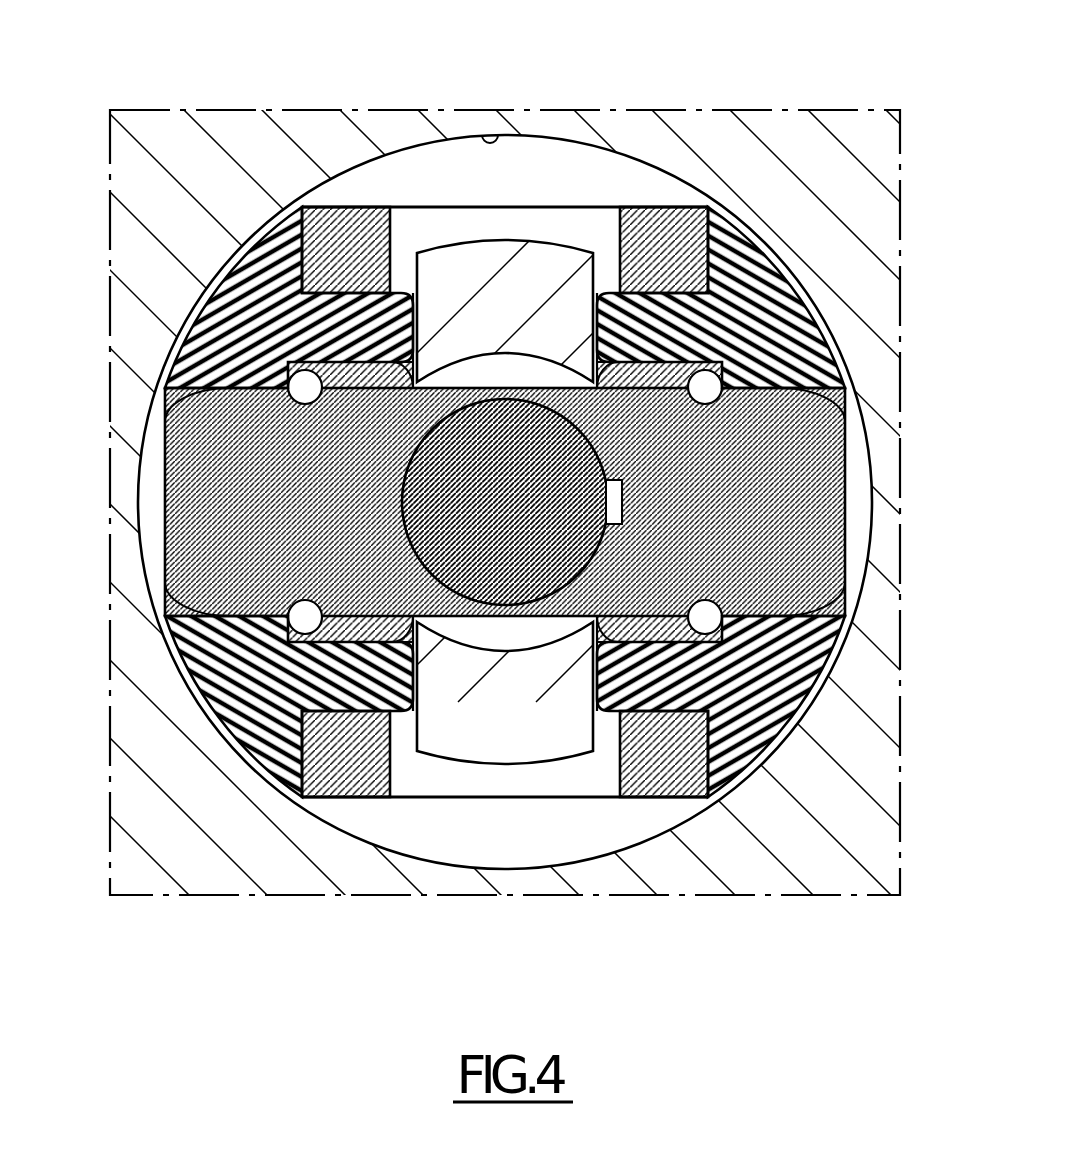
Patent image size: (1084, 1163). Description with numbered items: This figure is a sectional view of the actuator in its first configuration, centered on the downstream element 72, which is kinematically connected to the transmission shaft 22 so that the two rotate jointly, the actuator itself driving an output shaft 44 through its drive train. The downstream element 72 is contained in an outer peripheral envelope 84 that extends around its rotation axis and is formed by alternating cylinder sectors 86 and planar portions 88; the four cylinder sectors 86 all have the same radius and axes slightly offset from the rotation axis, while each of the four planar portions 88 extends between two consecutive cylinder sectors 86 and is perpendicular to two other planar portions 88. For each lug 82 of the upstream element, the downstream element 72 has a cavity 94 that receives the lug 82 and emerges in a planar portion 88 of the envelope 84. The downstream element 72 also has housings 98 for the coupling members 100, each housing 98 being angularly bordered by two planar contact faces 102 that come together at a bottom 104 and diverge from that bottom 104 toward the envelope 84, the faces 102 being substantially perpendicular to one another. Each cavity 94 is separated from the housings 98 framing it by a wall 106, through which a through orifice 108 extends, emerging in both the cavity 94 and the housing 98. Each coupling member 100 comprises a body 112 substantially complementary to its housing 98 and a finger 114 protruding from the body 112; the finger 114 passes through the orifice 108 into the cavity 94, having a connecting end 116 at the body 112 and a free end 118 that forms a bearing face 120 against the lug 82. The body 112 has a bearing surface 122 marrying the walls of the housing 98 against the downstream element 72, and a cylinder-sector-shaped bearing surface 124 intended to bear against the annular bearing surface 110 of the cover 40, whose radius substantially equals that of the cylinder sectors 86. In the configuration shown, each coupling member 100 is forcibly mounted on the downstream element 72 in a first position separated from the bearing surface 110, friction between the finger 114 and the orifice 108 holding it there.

The transmission shaft 22 is at (420, 512).
The output shaft 44 is at (463, 502).
The cover 40 is at (542, 581).
The downstream element 72 is at (502, 501).
The lug 82 is at (498, 496).
The outer peripheral envelope 84 is at (150, 503).
The cylindrical sector of revolution 86 is at (502, 491).
The planar portion 88 is at (555, 212).
The cavity 94 is at (498, 496).
The housing 98 is at (502, 501).
The coupling member 100 is at (502, 491).
The contact face 102 is at (502, 496).
The bottom 104 is at (705, 405).
The wall 106 is at (352, 250).
The through orifice 108 is at (505, 501).
The annular bearing surface 110 is at (466, 454).
The body 112 is at (502, 491).
The finger 114 is at (502, 496).
The connecting end 116 is at (502, 482).
The free end 118 is at (505, 501).
The bearing face 120 is at (498, 496).
The bearing surface 122 is at (502, 496).
The bearing surface 124 is at (245, 225).